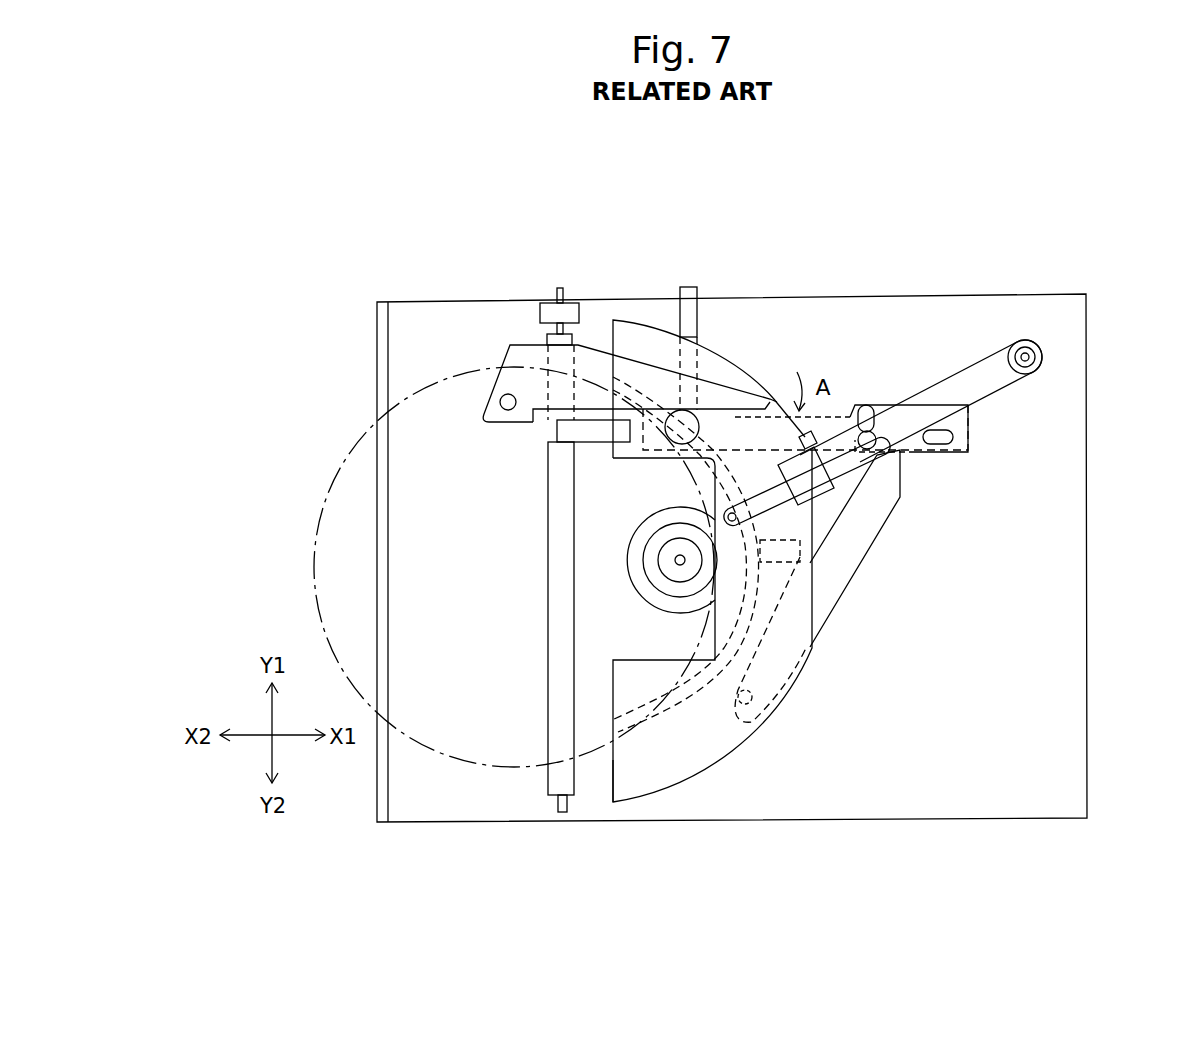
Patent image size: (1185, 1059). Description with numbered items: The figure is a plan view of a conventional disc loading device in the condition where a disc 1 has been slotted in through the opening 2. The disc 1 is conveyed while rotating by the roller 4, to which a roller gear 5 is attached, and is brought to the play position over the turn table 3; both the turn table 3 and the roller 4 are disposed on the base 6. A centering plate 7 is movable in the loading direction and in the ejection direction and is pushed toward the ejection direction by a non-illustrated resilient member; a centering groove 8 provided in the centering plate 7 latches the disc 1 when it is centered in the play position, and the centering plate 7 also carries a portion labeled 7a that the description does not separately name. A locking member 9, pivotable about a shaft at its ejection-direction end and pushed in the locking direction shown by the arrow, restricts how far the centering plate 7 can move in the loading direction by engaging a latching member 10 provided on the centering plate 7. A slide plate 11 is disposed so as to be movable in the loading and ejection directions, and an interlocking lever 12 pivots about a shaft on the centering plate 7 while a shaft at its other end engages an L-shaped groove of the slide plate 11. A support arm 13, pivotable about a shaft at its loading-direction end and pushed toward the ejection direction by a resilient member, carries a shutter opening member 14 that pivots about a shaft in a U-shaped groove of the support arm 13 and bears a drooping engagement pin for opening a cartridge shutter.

The disc 1 is at (360, 432).
The opening 2 is at (377, 336).
The turn table 3 is at (637, 547).
The roller 4 is at (548, 787).
The roller gear 5 is at (568, 313).
The base 6 is at (862, 327).
The centering plate 7 is at (732, 738).
The end portion of lever arm 7a is at (615, 770).
The centering groove 8 is at (657, 712).
The locking member 9 is at (557, 420).
The latching member 10 is at (598, 362).
The slide plate 11 is at (960, 437).
The interlocking lever 12 is at (825, 597).
The support arm 13 is at (988, 373).
The shutter opening member 14 is at (770, 497).